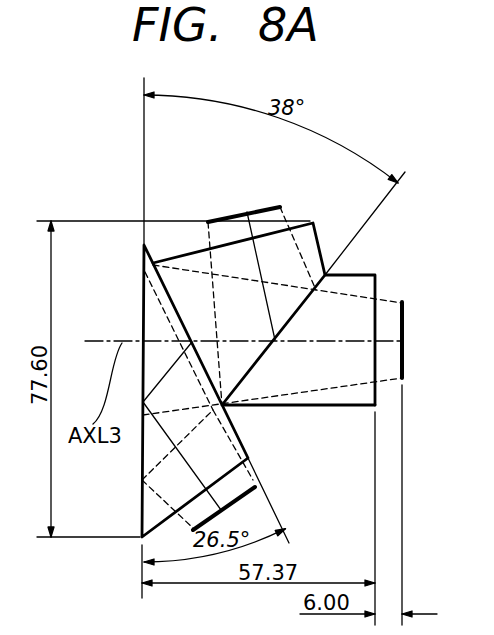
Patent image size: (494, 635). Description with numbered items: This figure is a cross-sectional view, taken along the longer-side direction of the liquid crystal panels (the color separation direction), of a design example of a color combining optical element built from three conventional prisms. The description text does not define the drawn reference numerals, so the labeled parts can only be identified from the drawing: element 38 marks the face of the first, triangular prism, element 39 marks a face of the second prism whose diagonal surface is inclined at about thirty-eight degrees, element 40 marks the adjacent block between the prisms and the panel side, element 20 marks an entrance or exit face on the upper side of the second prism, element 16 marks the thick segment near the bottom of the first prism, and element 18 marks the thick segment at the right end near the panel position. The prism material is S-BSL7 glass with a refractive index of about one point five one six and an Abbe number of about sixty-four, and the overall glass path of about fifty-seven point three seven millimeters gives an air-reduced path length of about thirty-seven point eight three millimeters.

The objective lens 16 is at (246, 500).
The eyepiece / image plane 18 is at (404, 327).
The exit face 20 is at (262, 208).
The first prism 38 is at (141, 300).
The second prism face 39 is at (320, 245).
The prism block 40 is at (360, 273).